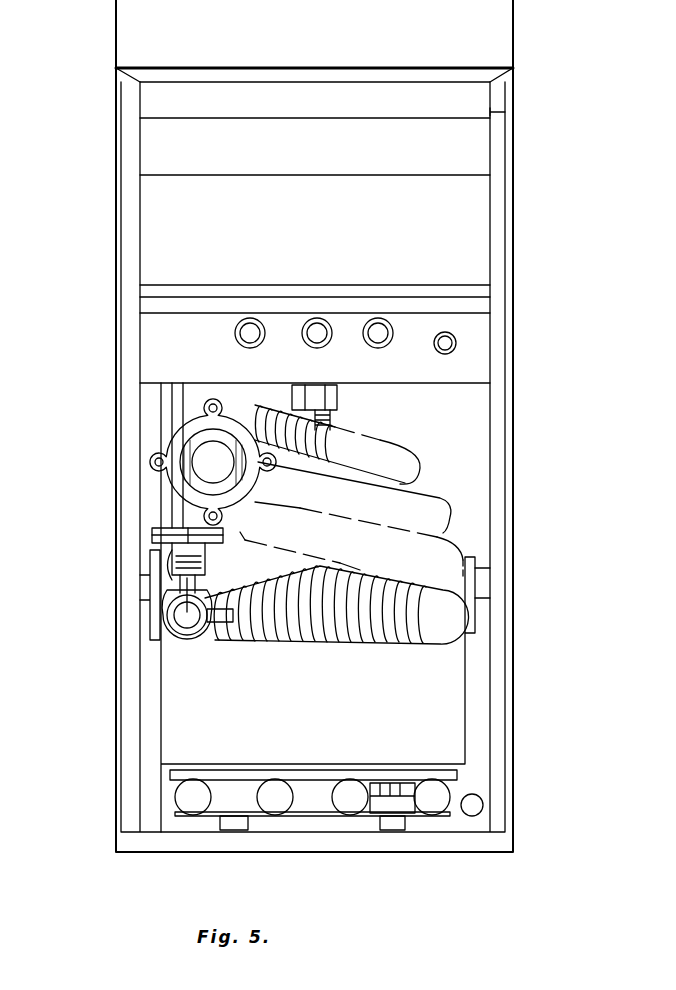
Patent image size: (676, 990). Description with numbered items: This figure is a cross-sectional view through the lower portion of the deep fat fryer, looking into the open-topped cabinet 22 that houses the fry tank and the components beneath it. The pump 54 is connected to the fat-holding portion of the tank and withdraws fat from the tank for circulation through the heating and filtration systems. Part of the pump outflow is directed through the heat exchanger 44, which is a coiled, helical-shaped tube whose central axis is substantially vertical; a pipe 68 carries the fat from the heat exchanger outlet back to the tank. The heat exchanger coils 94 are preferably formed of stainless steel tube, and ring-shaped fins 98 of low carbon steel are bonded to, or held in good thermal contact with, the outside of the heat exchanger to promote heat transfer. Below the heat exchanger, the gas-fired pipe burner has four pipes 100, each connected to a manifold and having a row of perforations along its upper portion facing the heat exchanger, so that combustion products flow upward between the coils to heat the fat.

The cabinet 22 is at (112, 410).
The pump 54 is at (222, 398).
The pipe 68 is at (330, 418).
The heat exchanger 44 is at (424, 478).
The heat exchanger coils 94 is at (448, 504).
The ring-shaped fins 98 is at (340, 645).
The pipes 100 is at (268, 798).